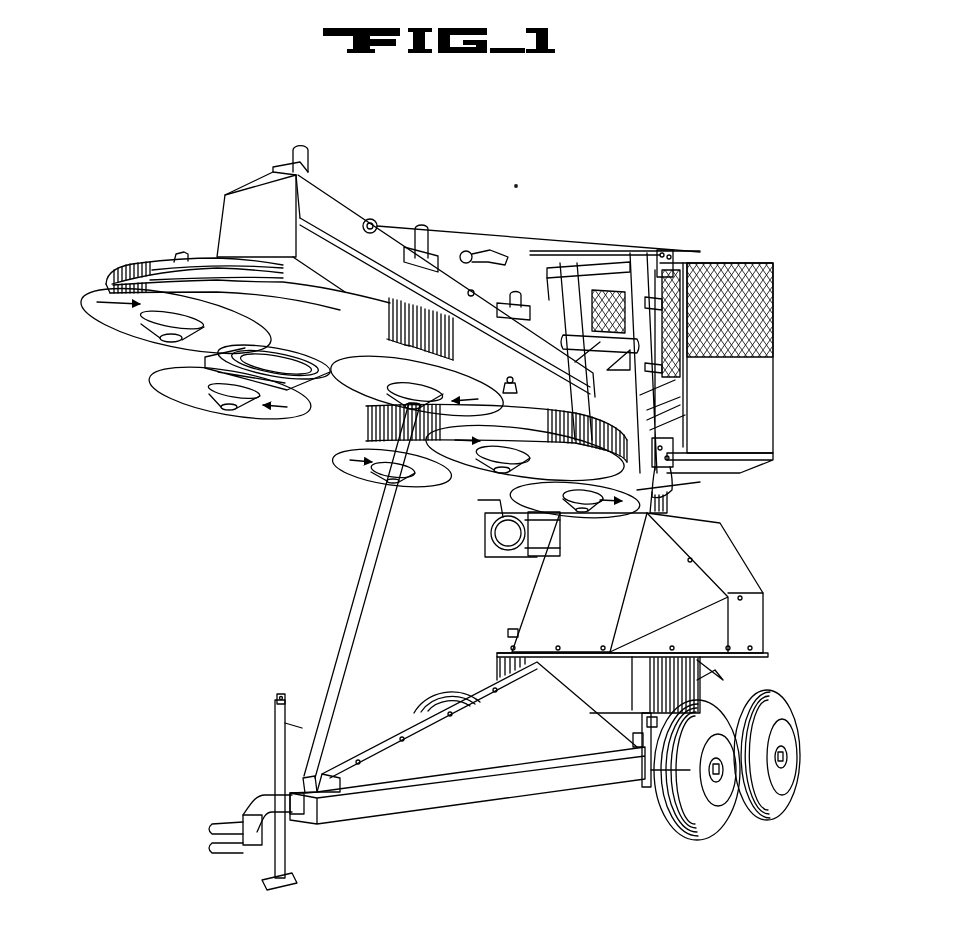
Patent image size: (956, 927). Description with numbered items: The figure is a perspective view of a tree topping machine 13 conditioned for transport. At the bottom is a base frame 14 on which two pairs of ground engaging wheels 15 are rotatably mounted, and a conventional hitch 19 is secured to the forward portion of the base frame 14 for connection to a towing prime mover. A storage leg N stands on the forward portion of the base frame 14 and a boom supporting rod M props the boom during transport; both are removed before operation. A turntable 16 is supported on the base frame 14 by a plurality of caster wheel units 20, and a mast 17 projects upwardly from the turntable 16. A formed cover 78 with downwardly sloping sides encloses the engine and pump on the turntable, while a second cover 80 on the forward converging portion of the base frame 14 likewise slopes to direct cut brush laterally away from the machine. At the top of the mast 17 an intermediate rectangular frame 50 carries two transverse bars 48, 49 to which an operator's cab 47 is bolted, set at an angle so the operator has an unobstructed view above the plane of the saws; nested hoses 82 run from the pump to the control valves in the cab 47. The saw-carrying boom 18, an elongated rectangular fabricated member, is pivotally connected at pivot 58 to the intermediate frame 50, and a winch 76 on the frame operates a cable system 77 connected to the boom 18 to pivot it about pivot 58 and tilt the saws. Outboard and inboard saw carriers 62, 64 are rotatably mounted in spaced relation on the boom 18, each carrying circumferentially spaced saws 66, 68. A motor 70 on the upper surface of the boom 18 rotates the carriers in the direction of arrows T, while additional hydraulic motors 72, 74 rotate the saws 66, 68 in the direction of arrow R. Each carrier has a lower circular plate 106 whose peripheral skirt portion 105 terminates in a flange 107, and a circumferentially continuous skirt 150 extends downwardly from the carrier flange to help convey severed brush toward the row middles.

The tree topping machine 13 is at (517, 188).
The base frame 14 is at (519, 795).
The ground engaging wheels 15 is at (442, 688).
The turntable 16 is at (496, 638).
The mast 17 is at (670, 492).
The saw-carrying boom 18 is at (243, 188).
The hitch 19 is at (228, 823).
The caster wheel units 20 is at (636, 731).
The operator's cab 47 is at (745, 397).
The transverse bar 48 is at (660, 266).
The transverse bar 49 is at (673, 451).
The intermediate frame 50 is at (577, 275).
The pivot 58 is at (606, 398).
The outboard saw carrier 62 is at (143, 265).
The inboard saw carrier 64 is at (537, 391).
The saws 66 is at (167, 383).
The saws 68 is at (373, 478).
The motor 70 is at (423, 227).
The hydraulic motor 72 is at (310, 166).
The hydraulic motor 74 is at (511, 294).
The winch 76 is at (507, 536).
The cable system 77 is at (570, 222).
The cover 78 is at (587, 618).
The cover 80 is at (496, 750).
The nested hoses 82 is at (680, 485).
The skirt portion 105 is at (200, 264).
The lower circular plate 106 is at (362, 333).
The flange 107 is at (276, 280).
The circumferentially continuous skirt 150 is at (370, 423).
The arrow indicating saw rotation direction R is at (105, 300).
The arrow indicating saw carrier rotation direction T is at (343, 321).
The boom supporting rod M is at (345, 620).
The storage leg N is at (273, 752).